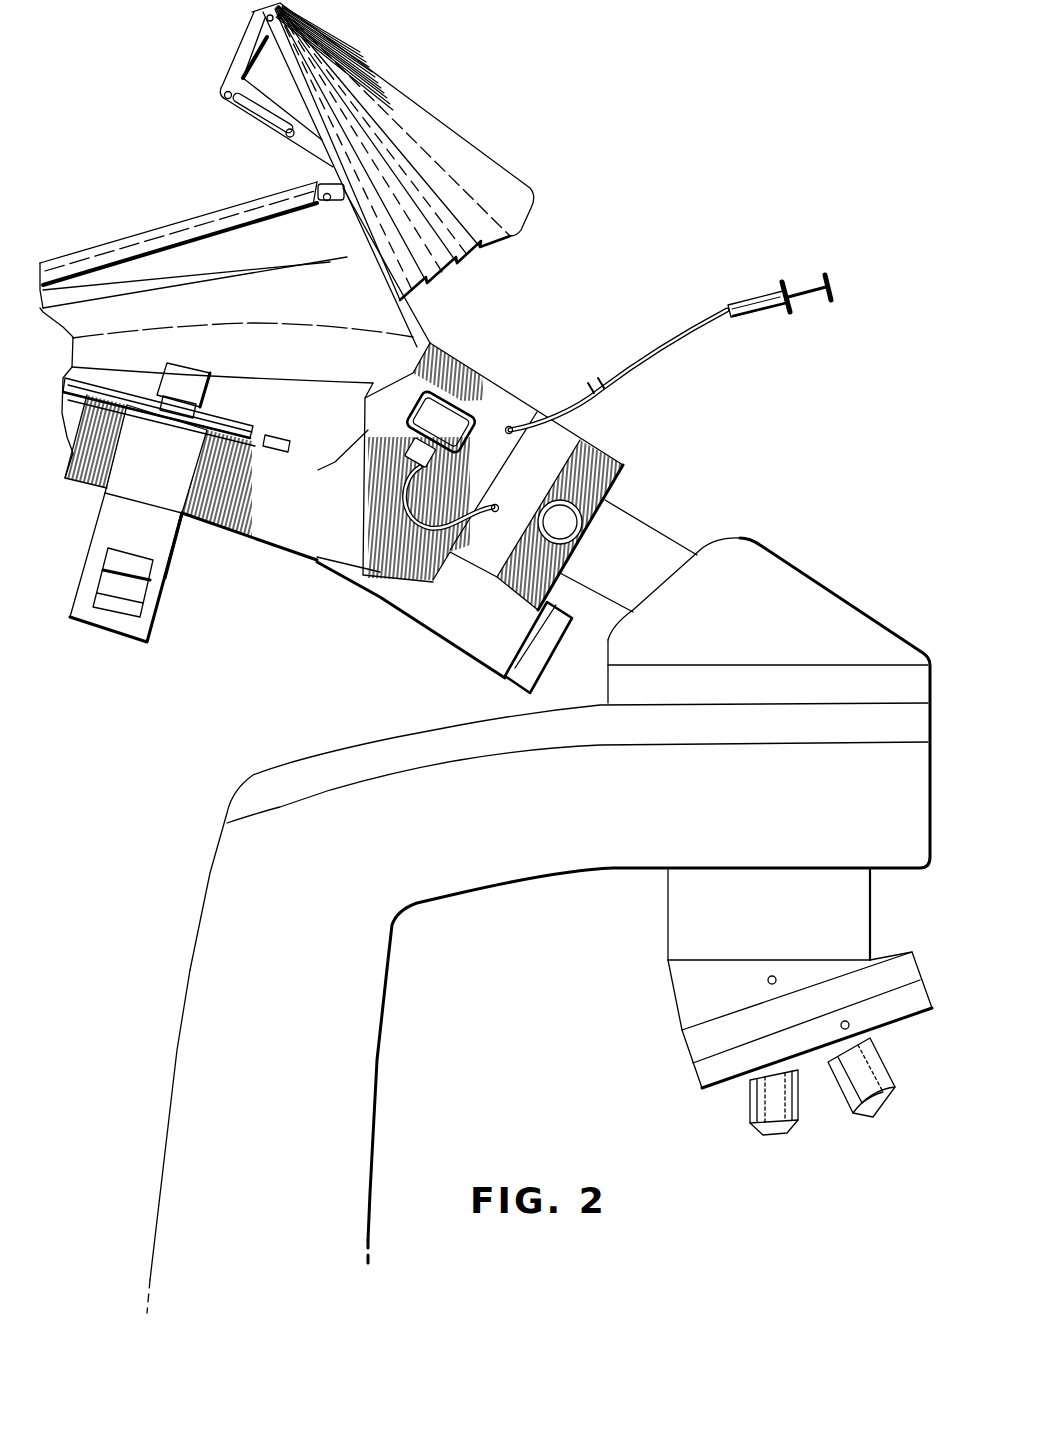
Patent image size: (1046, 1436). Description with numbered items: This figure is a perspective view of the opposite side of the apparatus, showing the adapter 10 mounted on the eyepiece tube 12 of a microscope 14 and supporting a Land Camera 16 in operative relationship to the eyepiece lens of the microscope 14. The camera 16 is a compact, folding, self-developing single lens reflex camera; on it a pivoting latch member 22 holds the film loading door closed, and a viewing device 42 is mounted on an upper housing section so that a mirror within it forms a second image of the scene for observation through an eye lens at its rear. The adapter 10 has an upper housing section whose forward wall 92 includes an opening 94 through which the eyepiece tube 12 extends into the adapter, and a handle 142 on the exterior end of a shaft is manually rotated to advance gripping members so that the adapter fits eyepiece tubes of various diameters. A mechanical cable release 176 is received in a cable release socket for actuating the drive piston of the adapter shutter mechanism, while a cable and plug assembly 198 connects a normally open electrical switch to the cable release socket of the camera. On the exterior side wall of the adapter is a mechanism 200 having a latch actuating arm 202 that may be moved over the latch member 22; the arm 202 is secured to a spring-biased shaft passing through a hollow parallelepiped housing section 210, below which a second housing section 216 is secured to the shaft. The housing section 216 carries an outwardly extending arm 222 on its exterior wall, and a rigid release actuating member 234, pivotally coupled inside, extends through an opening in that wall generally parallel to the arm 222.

The adapter 10 is at (277, 559).
The eyepiece tube 12 is at (663, 553).
The microscope 14 is at (628, 874).
The SX-70 Land Camera 16 is at (165, 226).
The latch member 22 is at (217, 420).
The viewing device 42 is at (482, 133).
The forward wall 92 is at (624, 467).
The opening 94 is at (612, 500).
The handle 142 is at (565, 530).
The mechanical cable release 176 is at (634, 360).
The cable and plug assembly 198 is at (410, 500).
The mechanism 200 is at (188, 524).
The latch actuating arm 202 is at (188, 373).
The housing section 210 is at (182, 464).
The second housing section 216 is at (98, 526).
The arm 222 is at (135, 560).
The release actuating member 234 is at (118, 607).